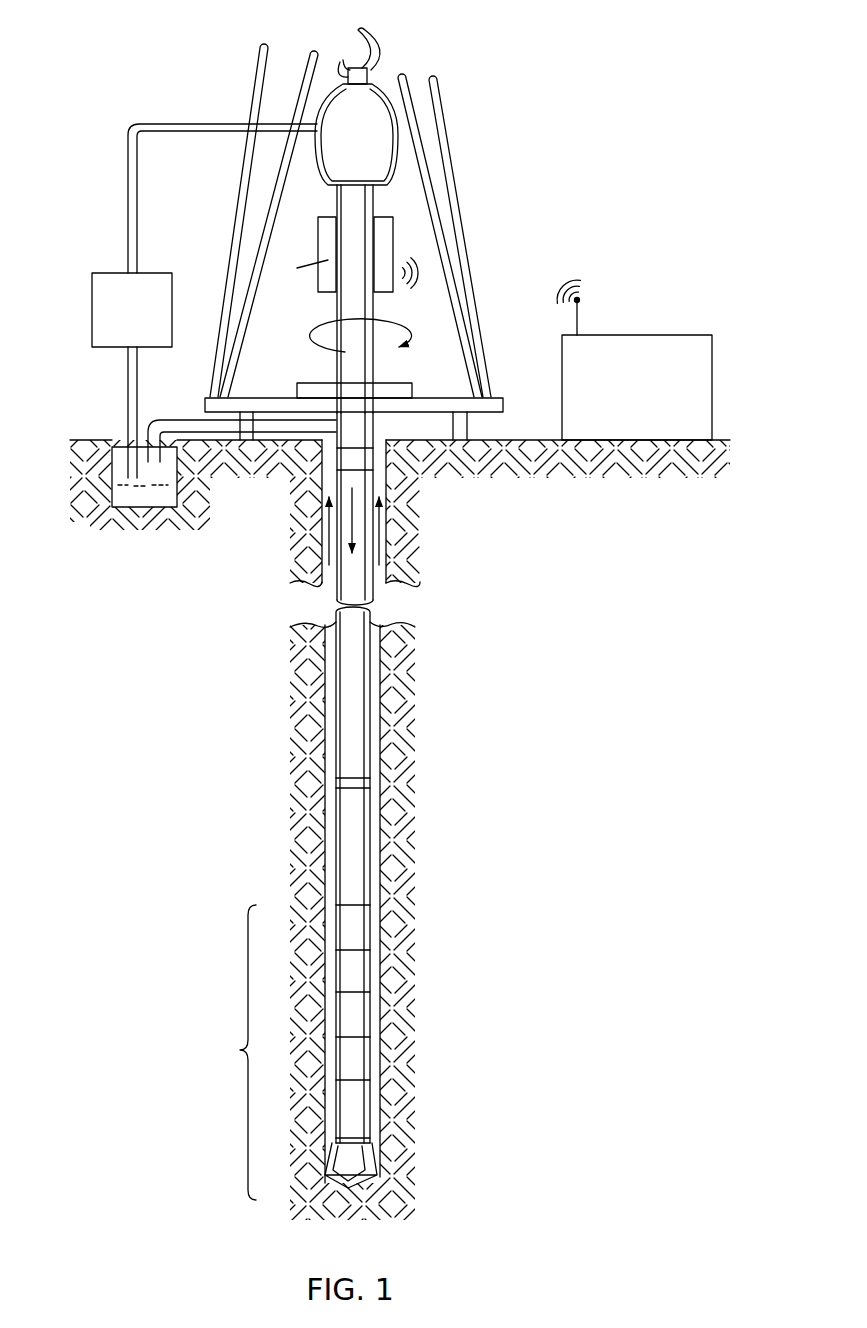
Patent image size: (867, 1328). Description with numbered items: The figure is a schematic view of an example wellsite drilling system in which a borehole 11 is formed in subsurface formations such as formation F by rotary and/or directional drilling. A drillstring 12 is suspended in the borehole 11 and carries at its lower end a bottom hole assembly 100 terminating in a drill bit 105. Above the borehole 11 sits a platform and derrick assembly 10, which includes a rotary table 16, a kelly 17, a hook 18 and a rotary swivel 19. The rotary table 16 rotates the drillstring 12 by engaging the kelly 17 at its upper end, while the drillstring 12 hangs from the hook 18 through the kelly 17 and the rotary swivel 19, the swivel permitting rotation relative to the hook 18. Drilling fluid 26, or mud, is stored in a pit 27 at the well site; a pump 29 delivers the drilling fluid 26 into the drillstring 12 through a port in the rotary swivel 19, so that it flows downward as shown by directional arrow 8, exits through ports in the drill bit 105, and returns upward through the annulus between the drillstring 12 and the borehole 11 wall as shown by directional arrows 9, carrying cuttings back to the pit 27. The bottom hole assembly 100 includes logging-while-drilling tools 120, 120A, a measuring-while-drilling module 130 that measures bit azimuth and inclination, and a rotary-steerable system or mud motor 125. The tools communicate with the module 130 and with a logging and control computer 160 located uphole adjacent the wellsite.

The platform and derrick assembly 10 is at (480, 120).
The hook 18 is at (354, 34).
The rotary swivel 19 is at (343, 170).
The pump 29 is at (107, 348).
The pit 27 is at (118, 438).
The drilling fluid 26 is at (148, 497).
The kelly 17 is at (348, 368).
The rotary table 16 is at (393, 382).
The drillstring 12 is at (351, 434).
The borehole 11 is at (387, 437).
The directional arrows 9 is at (327, 515).
The directional arrow 8 is at (352, 523).
The logging and control computer 160 is at (697, 335).
The formation F is at (410, 683).
The bottom hole assembly 100 is at (237, 1050).
The logging-while-drilling tool 120 is at (357, 970).
The measuring-while-drilling module 130 is at (357, 1018).
The logging-while-drilling tool 120A is at (357, 1062).
The rotary-steerable system or mud motor 125 is at (357, 1107).
The drill bit 105 is at (353, 1158).